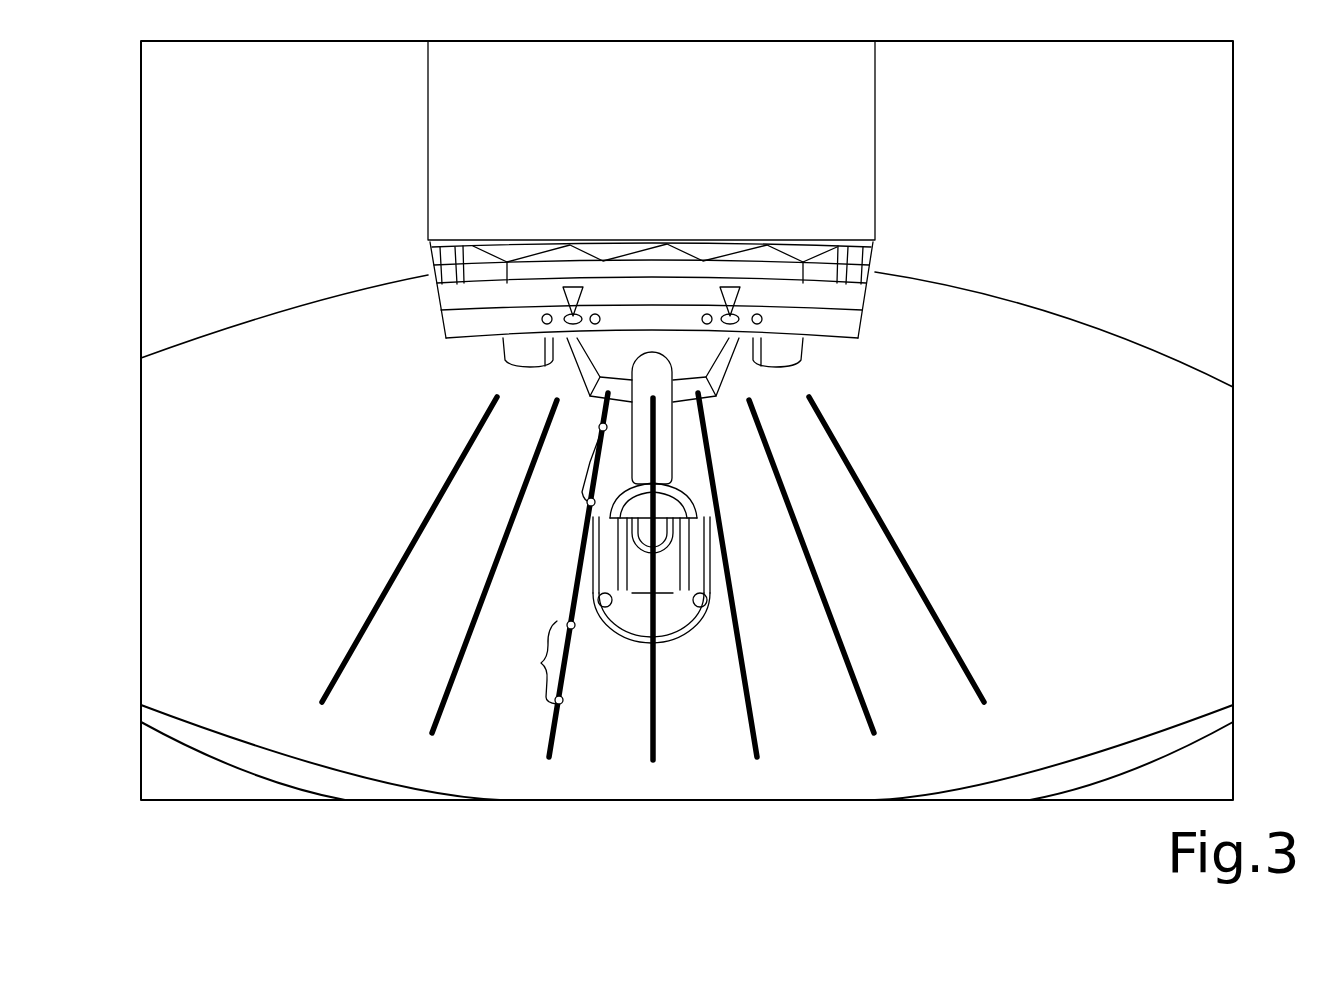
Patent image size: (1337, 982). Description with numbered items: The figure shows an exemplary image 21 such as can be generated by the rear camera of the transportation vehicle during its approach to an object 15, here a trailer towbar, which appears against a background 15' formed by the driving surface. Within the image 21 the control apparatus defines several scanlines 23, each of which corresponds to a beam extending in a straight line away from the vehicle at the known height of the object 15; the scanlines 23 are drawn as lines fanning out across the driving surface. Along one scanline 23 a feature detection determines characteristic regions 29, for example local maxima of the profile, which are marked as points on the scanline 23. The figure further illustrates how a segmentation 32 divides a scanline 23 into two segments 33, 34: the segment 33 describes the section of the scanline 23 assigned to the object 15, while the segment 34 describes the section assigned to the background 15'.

The image 21 is at (1068, 178).
The segmentation 32 is at (372, 450).
The scanline 23 is at (347, 660).
The object 15 is at (651, 563).
The background 15' is at (697, 579).
The characteristic region 29 is at (599, 425).
The segment 33 is at (588, 462).
The segment 34 is at (530, 662).